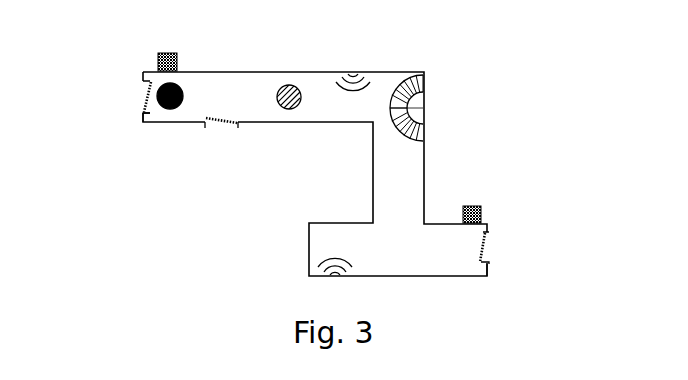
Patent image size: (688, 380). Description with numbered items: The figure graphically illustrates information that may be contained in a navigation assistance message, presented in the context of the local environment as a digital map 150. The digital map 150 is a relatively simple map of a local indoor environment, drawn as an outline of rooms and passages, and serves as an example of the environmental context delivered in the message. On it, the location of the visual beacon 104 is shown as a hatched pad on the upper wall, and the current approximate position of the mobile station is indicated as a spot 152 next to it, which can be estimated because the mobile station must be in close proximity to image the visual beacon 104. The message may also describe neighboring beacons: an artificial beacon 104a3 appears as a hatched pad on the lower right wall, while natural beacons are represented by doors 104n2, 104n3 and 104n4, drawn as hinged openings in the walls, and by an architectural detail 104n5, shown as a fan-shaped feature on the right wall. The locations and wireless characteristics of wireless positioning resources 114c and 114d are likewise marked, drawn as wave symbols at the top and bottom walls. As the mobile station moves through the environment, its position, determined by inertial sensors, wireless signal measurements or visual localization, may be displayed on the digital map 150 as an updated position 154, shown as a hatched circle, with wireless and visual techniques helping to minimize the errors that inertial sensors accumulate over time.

The digital map 150 is at (456, 61).
The visual beacon 104 is at (158, 54).
The spot 152 is at (149, 97).
The door 104n2 is at (143, 112).
The door 104n3 is at (235, 127).
The updated position 154 is at (287, 85).
The wireless positioning resource 114c is at (356, 70).
The architectural detail 104n5 is at (424, 107).
The artificial beacon 104a3 is at (482, 215).
The door 104n4 is at (487, 264).
The wireless positioning resource 114d is at (309, 277).